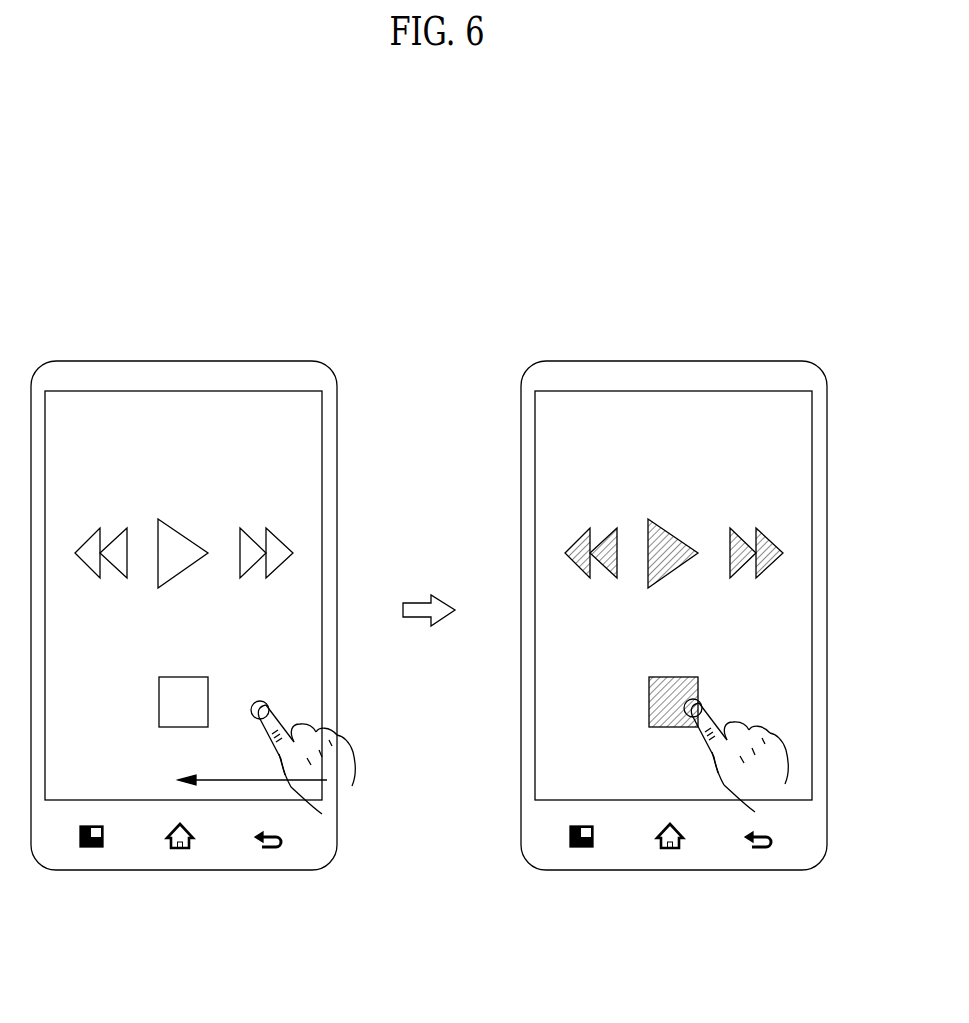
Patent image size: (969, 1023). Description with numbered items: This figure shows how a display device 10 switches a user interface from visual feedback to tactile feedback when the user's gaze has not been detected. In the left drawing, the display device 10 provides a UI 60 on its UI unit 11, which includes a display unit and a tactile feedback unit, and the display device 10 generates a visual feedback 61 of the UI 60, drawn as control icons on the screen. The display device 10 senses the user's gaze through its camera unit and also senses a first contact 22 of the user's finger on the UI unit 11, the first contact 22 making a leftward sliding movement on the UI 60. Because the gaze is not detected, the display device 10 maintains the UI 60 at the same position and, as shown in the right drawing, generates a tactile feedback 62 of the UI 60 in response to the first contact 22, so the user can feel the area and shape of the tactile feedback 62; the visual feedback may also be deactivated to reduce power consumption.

The display device 10 is at (338, 505).
The UI unit 11 is at (322, 468).
The UI 60 is at (278, 430).
The visual feedback 61 is at (292, 557).
The tactile feedback 62 is at (782, 557).
The first contact 22 is at (340, 750).